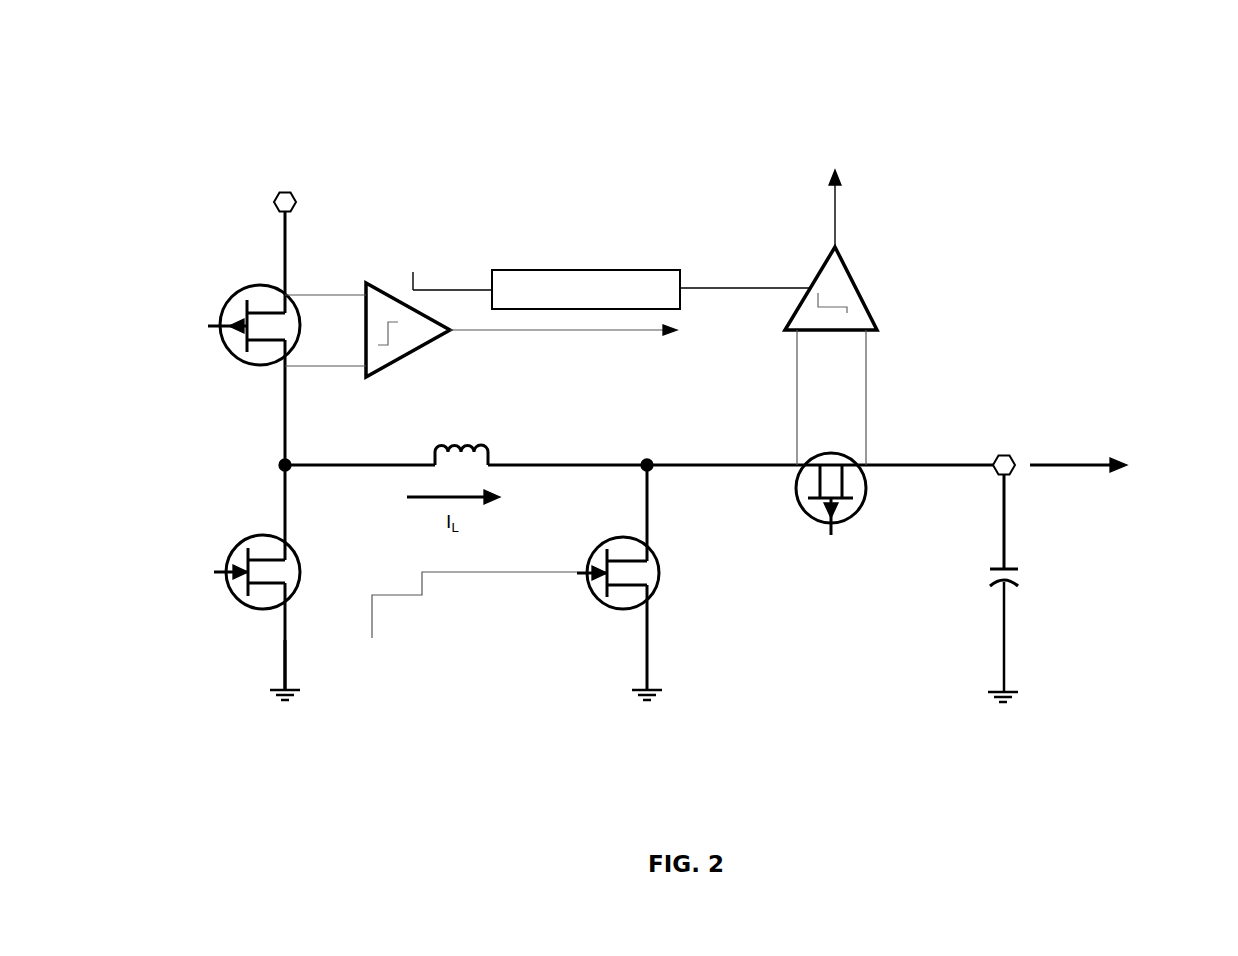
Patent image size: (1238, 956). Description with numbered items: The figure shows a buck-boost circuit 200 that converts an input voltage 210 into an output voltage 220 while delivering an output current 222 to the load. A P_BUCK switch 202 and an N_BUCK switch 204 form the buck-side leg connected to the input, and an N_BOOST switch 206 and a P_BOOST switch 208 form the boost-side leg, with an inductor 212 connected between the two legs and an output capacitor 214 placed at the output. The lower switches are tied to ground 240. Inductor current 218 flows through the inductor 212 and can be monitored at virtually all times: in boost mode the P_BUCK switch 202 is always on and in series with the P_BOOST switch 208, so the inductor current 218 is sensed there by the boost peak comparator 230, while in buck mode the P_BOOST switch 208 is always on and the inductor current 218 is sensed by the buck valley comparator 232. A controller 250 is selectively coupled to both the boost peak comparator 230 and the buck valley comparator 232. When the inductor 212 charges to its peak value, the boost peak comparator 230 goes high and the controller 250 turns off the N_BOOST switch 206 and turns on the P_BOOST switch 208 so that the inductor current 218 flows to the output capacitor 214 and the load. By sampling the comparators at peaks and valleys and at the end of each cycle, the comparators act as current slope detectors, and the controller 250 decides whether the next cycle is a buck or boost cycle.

The buck-boost circuit 200 is at (1126, 92).
The P_BUCK switch 202 is at (232, 300).
The buck NMOS transistor N_BUCK 204 is at (237, 545).
The N_BOOST switch 206 is at (660, 560).
The P_BOOST switch 208 is at (858, 512).
The input voltage 210 is at (296, 190).
The inductor 212 is at (470, 432).
The output capacitor 214 is at (1010, 570).
The inductor current 218 is at (455, 537).
The output voltage 220 is at (1005, 422).
The output current 222 is at (1070, 462).
The boost peak comparator 230 is at (410, 355).
The buck valley comparator 232 is at (843, 253).
The ground 240 is at (293, 685).
The controller 250 is at (600, 270).